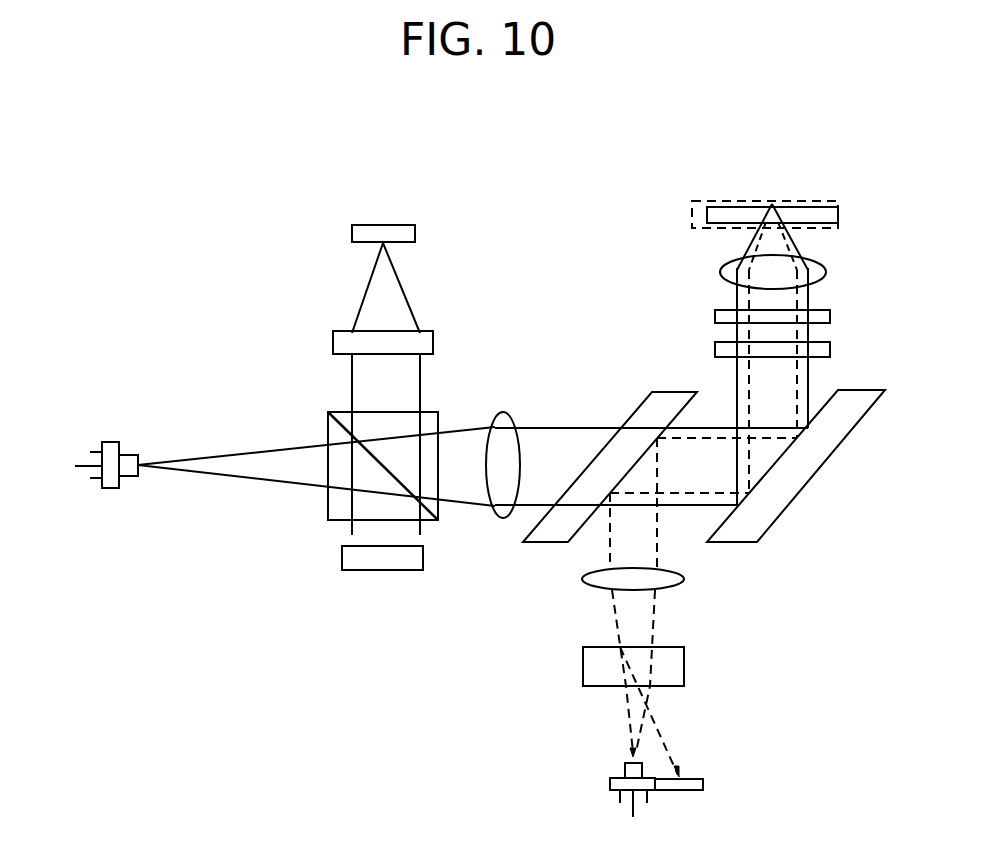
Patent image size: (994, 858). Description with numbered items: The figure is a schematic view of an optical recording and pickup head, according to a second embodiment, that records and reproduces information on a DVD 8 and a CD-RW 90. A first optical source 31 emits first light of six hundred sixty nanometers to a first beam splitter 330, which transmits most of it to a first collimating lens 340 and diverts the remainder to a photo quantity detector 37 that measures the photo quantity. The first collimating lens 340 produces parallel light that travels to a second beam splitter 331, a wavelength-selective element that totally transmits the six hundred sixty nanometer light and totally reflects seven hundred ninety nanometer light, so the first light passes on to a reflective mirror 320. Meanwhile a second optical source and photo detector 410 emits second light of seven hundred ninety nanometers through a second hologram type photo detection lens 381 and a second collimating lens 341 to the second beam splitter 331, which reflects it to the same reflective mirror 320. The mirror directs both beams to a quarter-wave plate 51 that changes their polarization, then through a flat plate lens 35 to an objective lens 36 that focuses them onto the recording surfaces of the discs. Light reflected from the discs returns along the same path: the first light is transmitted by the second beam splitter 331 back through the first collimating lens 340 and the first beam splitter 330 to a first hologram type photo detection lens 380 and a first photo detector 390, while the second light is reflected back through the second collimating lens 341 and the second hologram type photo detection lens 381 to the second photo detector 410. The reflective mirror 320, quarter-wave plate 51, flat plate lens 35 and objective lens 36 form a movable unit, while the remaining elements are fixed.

The first optical source 31 is at (110, 488).
The first beam splitter 330 is at (438, 412).
The first hologram type photo detection lens 380 is at (433, 343).
The first photo detector 390 is at (415, 233).
The photo quantity detector 37 is at (423, 553).
The first collimating lens 340 is at (509, 415).
The second beam splitter 331 is at (675, 392).
The reflective mirror 320 is at (818, 467).
The objective lens 36 is at (720, 272).
The flat plate lens 35 is at (830, 316).
The quarter-wave plate 51 is at (830, 349).
The DVD 8 is at (838, 213).
The CD-RW 90 is at (726, 200).
The second collimating lens 341 is at (684, 579).
The second hologram type photo detection lens 381 is at (684, 665).
The second optical source and photo detector 410 is at (703, 784).